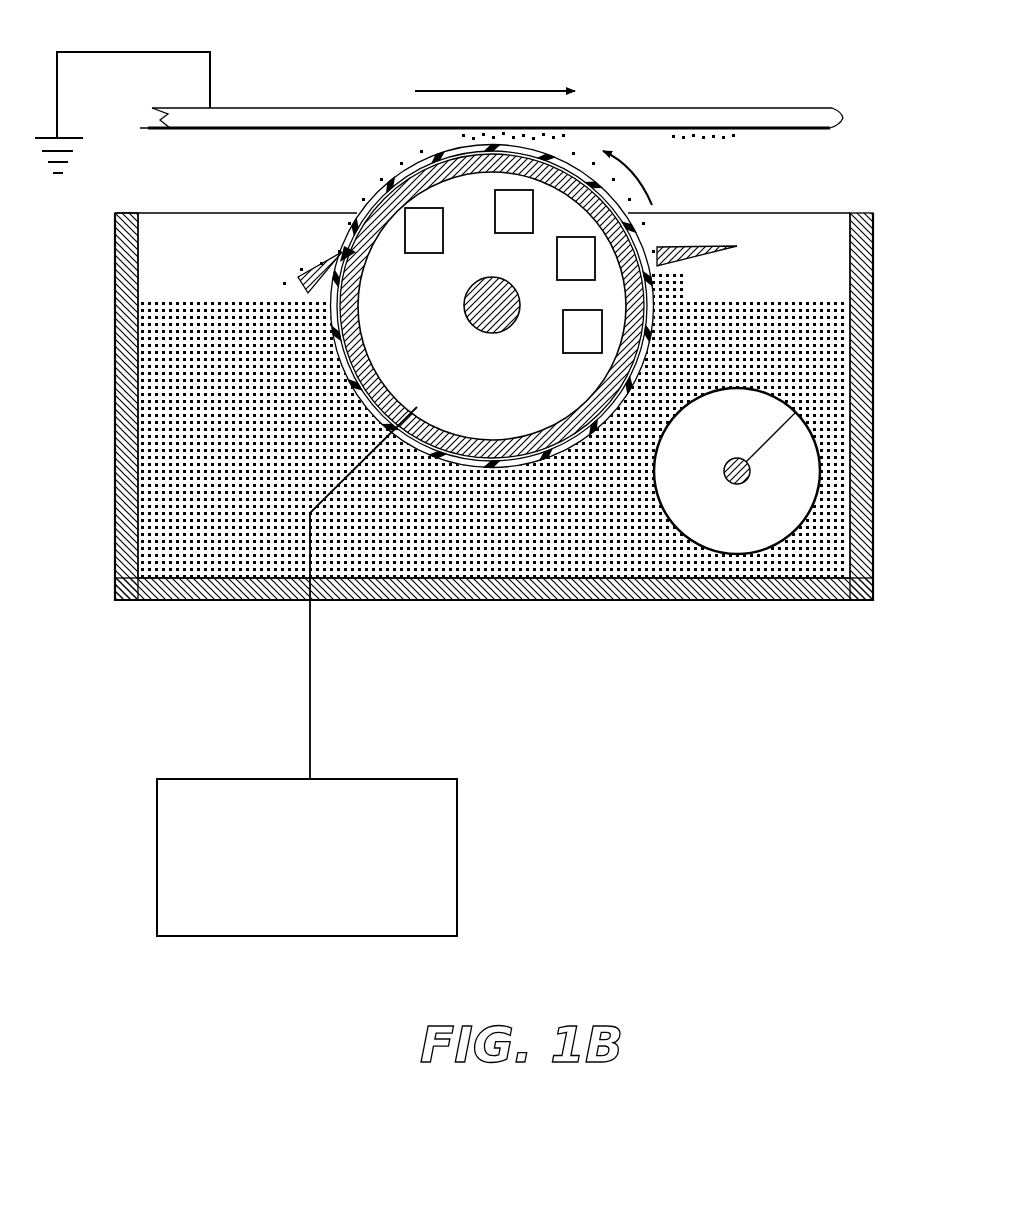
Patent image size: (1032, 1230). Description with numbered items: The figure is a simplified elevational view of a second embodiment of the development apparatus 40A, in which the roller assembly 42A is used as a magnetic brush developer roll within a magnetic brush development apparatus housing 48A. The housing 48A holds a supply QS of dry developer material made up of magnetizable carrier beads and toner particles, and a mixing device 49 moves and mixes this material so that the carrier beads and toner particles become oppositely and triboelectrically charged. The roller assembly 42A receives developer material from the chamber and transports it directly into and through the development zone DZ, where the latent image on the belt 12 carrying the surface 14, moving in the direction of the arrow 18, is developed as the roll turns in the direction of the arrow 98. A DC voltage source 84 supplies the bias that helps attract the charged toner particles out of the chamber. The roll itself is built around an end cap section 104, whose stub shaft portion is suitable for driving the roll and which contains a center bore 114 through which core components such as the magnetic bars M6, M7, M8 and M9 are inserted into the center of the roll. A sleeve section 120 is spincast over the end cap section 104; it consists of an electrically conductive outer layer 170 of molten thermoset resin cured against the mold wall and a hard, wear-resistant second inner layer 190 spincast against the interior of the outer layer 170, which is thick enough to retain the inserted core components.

The photoreceptor belt 12 is at (641, 122).
The photoreceptor surface 14 is at (764, 131).
The direction of belt movement 18 is at (494, 91).
The development apparatus 40A is at (864, 141).
The roller assembly 42A is at (563, 403).
The magnetic brush development apparatus housing 48A is at (873, 246).
The mixing device 49 is at (700, 482).
The DC voltage source 84 is at (457, 860).
The direction of roller rotation 98 is at (627, 170).
The end cap section 104 is at (503, 408).
The center bore 114 is at (472, 325).
The sleeve section 120 is at (440, 470).
The outer layer 170 is at (549, 462).
The inner layer 190 is at (370, 208).
The development zone DZ is at (440, 140).
The supply of developer material QS is at (243, 520).
The magnetic bar M6 is at (563, 330).
The magnetic bar M7 is at (557, 255).
The magnetic bar M8 is at (517, 233).
The magnetic bar M9 is at (425, 253).